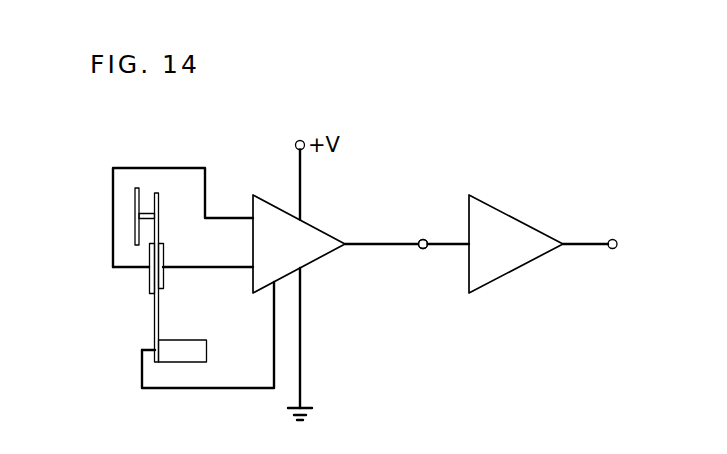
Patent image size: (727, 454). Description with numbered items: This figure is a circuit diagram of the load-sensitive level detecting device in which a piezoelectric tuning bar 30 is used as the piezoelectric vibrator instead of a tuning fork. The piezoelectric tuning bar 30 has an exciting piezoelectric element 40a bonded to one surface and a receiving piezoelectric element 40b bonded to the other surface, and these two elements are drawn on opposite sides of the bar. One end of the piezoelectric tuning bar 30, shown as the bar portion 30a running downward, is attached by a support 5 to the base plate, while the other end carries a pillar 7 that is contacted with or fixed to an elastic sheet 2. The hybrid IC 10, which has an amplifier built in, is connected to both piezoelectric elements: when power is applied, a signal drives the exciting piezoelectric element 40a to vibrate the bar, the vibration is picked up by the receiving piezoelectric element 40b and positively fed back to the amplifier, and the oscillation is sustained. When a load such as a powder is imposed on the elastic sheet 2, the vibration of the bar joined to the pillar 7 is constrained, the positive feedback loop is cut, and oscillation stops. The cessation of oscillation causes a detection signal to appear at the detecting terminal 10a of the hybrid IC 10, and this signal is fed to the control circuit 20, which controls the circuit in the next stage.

The elastic sheet 2 is at (133, 205).
The pillar 7 is at (150, 212).
The support 5 is at (207, 347).
The hybrid IC 10 is at (262, 196).
The detecting terminal 10a is at (423, 239).
The control circuit 20 is at (510, 215).
The piezoelectric tuning bar 30 is at (155, 340).
The piezoelectric tuning bar portion 30a is at (161, 311).
The exciting piezoelectric element 40a is at (164, 272).
The receiving piezoelectric element 40b is at (149, 274).